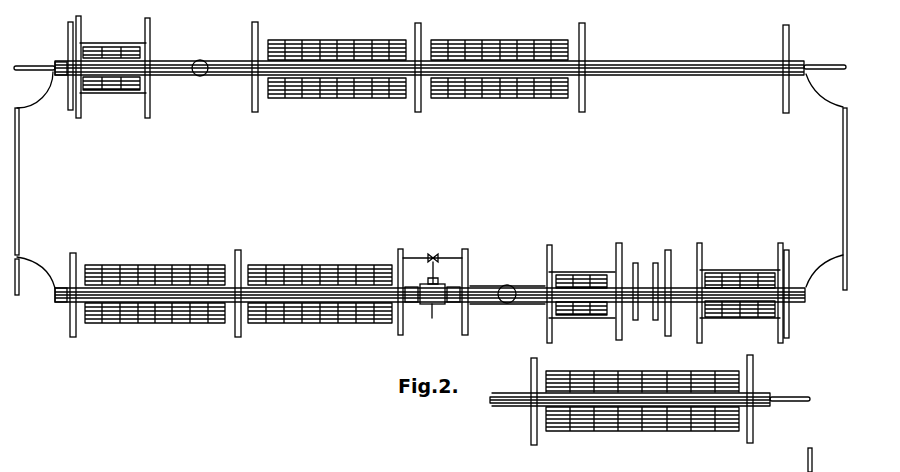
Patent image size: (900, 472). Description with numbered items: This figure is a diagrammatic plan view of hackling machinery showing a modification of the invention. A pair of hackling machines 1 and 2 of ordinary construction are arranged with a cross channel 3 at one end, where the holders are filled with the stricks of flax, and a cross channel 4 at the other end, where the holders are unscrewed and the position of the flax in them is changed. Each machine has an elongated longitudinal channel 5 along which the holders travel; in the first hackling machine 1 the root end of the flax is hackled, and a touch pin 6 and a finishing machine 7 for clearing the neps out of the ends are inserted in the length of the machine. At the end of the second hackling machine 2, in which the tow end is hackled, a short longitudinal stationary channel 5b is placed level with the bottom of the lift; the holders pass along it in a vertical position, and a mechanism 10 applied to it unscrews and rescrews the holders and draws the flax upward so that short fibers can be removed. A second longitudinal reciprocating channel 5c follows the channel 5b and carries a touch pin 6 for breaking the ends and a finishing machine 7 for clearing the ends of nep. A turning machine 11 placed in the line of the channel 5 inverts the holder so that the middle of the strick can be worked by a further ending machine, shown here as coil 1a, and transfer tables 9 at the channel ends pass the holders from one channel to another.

The hackling machine 1 is at (360, 88).
The auxiliary coil 1a is at (763, 313).
The hackling machine 2 is at (262, 275).
The cross channel 3 is at (843, 150).
The cross channel 4 is at (19, 228).
The longitudinal channel 5 is at (403, 66).
The short longitudinal stationary channel 5b is at (443, 279).
The second longitudinal reciprocating channel 5c is at (473, 292).
The touch pin 6 is at (200, 60).
The finishing machine 7 is at (122, 82).
The transfer table 9 is at (65, 80).
The automatic mechanism 10 is at (432, 320).
The turning machine 11 is at (656, 318).